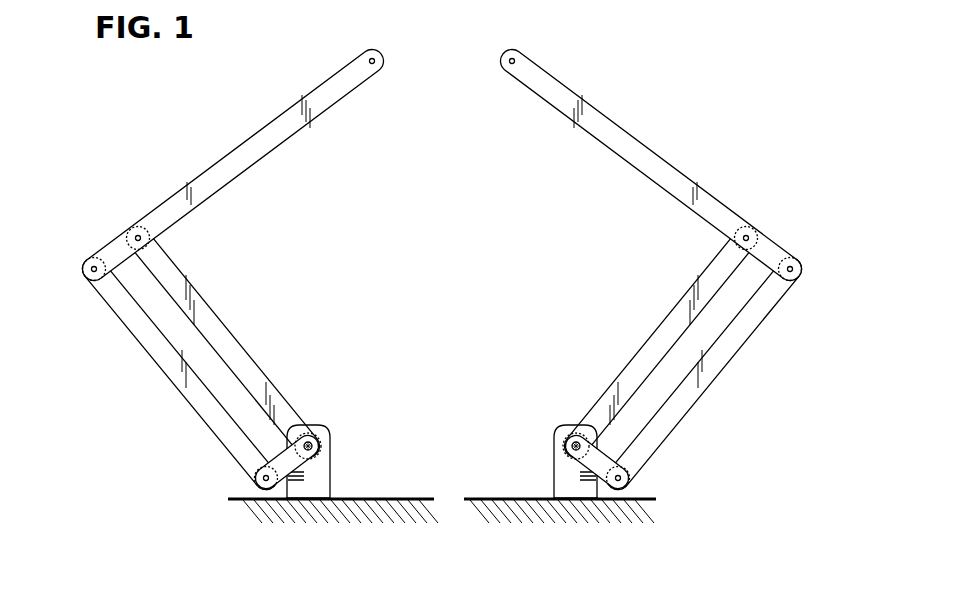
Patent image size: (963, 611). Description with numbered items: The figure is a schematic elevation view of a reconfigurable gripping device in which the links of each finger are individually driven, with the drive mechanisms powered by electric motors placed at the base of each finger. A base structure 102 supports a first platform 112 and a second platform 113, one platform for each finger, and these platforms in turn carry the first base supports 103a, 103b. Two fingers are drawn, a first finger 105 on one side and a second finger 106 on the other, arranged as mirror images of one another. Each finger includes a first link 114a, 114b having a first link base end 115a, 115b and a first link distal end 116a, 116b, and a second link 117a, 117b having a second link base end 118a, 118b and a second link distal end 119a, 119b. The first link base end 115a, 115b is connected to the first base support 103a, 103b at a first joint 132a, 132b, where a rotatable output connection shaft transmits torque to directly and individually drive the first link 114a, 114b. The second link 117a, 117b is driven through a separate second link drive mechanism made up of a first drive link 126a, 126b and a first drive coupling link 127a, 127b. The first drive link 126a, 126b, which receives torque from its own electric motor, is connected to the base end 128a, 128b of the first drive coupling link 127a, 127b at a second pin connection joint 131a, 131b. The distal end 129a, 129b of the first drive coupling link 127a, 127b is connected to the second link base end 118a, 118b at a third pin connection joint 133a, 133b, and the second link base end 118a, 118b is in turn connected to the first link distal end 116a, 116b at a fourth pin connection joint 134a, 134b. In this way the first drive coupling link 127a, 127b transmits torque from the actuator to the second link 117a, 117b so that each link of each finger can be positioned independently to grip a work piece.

The base structure 102 is at (442, 534).
The first base support 103a is at (345, 454).
The first base support 103b is at (538, 454).
The first finger 105 is at (229, 275).
The second finger 106 is at (655, 275).
The first platform 112 is at (294, 505).
The second platform 113 is at (598, 505).
The first link 114a is at (222, 341).
The first link 114b is at (660, 341).
The first link base end 115a is at (323, 410).
The first link base end 115b is at (559, 410).
The first link distal end 116a is at (193, 278).
The first link distal end 116b is at (690, 278).
The second link 117a is at (233, 165).
The second link 117b is at (651, 165).
The second link base end 118a is at (105, 232).
The second link base end 118b is at (778, 232).
The second link distal end 119a is at (322, 35).
The second link distal end 119b is at (562, 35).
The first drive link 126a is at (270, 521).
The first drive link 126b is at (612, 521).
The first drive coupling link 127a is at (179, 373).
The first drive coupling link 127b is at (703, 373).
The base end 128a is at (202, 474).
The base end 128b is at (682, 474).
The distal end 129a is at (82, 297).
The distal end 129b is at (802, 297).
The second pin connection joint 131a is at (232, 457).
The second pin connection joint 131b is at (651, 457).
The first joint 132a is at (337, 493).
The first joint 132b is at (546, 493).
The third pin connection joint 133a is at (79, 251).
The third pin connection joint 133b is at (805, 251).
The fourth pin connection joint 134a is at (200, 231).
The fourth pin connection joint 134b is at (684, 231).